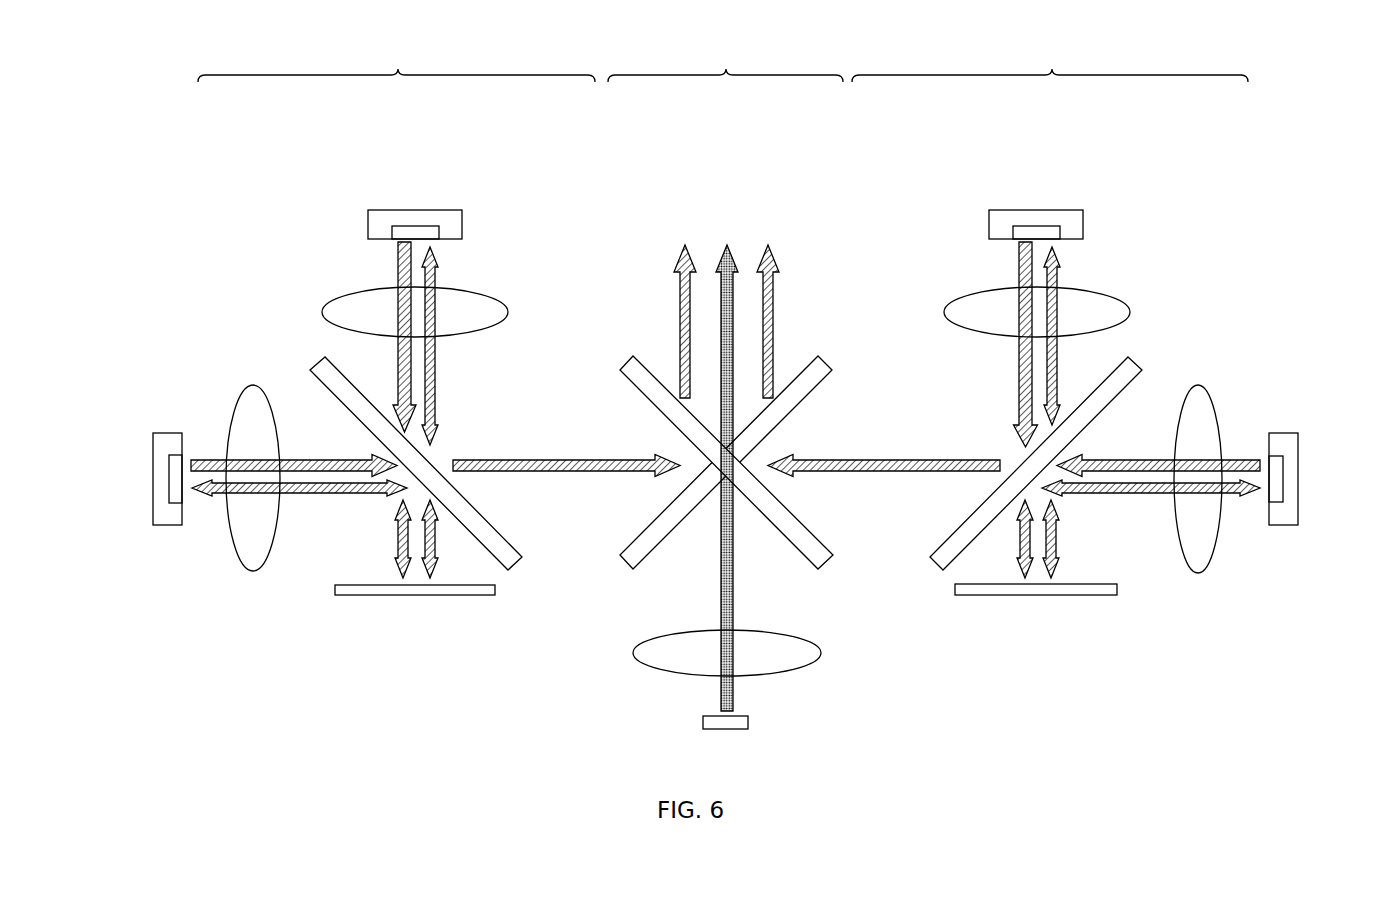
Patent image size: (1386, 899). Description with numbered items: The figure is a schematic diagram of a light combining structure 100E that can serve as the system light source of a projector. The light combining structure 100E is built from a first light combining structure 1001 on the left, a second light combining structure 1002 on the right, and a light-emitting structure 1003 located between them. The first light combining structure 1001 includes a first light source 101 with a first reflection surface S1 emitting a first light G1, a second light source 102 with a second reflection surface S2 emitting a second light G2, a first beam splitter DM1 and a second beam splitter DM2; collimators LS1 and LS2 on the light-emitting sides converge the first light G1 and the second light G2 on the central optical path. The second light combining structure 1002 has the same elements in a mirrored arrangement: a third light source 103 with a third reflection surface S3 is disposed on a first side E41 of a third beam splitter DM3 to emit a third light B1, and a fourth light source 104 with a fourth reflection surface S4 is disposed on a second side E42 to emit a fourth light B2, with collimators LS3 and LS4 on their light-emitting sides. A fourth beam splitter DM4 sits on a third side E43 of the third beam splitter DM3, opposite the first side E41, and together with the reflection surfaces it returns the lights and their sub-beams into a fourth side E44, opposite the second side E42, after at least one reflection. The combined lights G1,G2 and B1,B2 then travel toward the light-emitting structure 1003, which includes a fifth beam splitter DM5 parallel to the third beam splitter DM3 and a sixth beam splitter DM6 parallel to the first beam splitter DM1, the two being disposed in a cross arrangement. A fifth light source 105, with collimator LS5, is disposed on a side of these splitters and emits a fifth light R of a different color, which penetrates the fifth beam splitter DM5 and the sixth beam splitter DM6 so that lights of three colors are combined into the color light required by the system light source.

The first light combining structure 1001 is at (396, 59).
The second light combining structure 1002 is at (1050, 59).
The light-emitting structure 1003 is at (725, 59).
The light combining structure 100E is at (1372, 66).
The first light source 101 is at (401, 226).
The second light source 102 is at (169, 484).
The third light source 103 is at (1024, 226).
The fourth light source 104 is at (1283, 484).
The fifth light source 105 is at (748, 721).
The first reflection surface S1 is at (437, 210).
The second reflection surface S2 is at (153, 455).
The third reflection surface S3 is at (1058, 210).
The fourth reflection surface S4 is at (1298, 455).
The first light G1 is at (398, 264).
The second light G2 is at (210, 460).
The third light B1 is at (1019, 264).
The fourth light B2 is at (1244, 459).
The combined first and second lights G1,G2 is at (680, 324).
The combined third and fourth lights B1,B2 is at (773, 326).
The fifth light R is at (733, 286).
The collimator LS1 is at (478, 296).
The collimator LS2 is at (253, 385).
The collimator LS3 is at (1100, 296).
The collimator LS4 is at (1198, 385).
The collimator LS5 is at (821, 652).
The first beam splitter DM1 is at (503, 530).
The second beam splitter DM2 is at (468, 595).
The third beam splitter DM3 is at (951, 530).
The fourth beam splitter DM4 is at (1090, 595).
The fifth beam splitter DM5 is at (663, 545).
The sixth beam splitter DM6 is at (787, 545).
The first side E41 is at (1170, 235).
The second side E42 is at (1328, 417).
The third side E43 is at (1093, 662).
The fourth side E44 is at (977, 432).